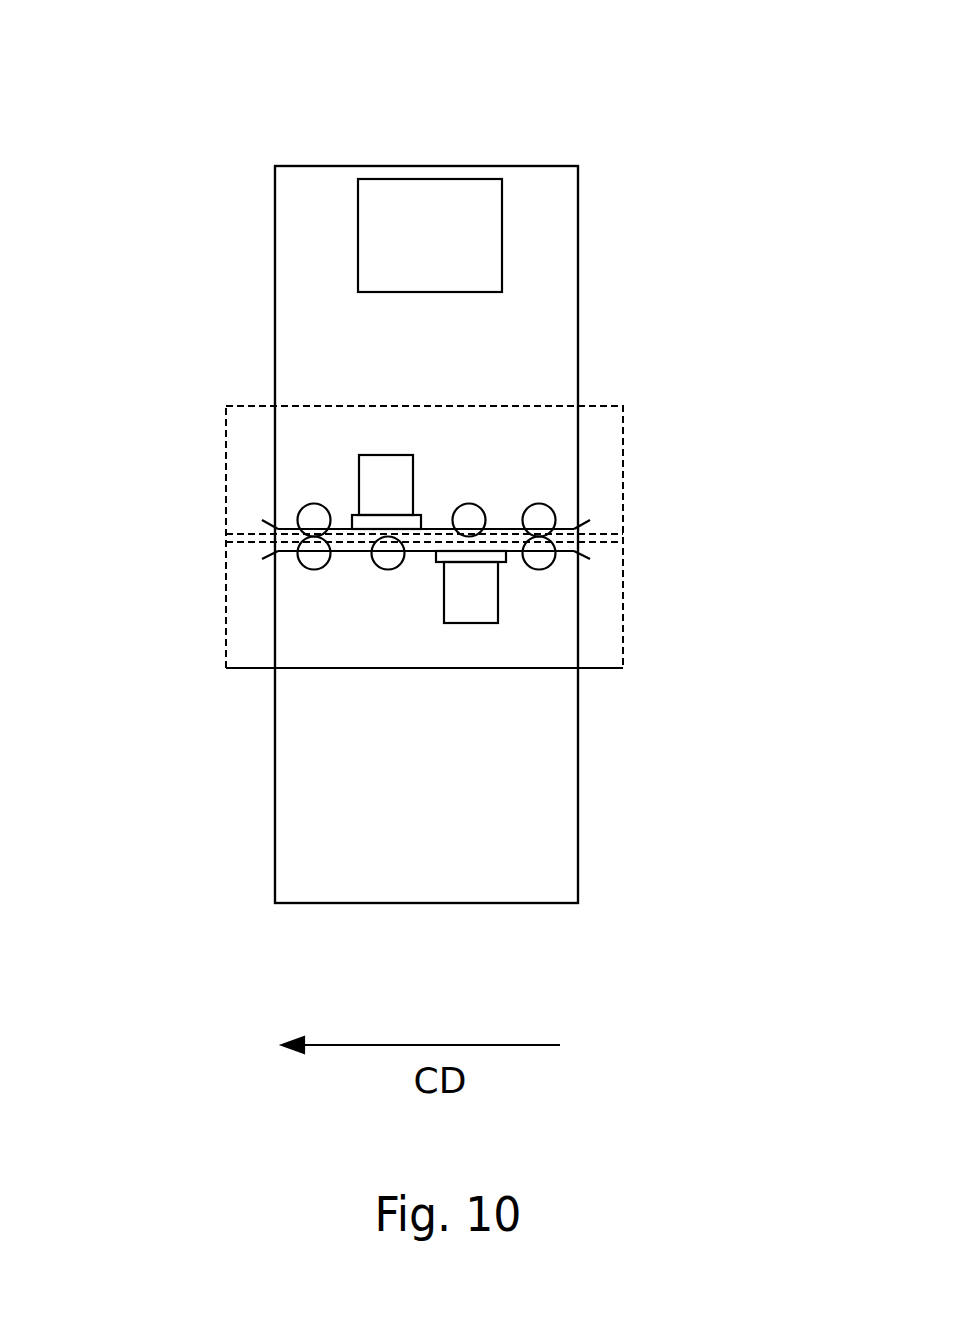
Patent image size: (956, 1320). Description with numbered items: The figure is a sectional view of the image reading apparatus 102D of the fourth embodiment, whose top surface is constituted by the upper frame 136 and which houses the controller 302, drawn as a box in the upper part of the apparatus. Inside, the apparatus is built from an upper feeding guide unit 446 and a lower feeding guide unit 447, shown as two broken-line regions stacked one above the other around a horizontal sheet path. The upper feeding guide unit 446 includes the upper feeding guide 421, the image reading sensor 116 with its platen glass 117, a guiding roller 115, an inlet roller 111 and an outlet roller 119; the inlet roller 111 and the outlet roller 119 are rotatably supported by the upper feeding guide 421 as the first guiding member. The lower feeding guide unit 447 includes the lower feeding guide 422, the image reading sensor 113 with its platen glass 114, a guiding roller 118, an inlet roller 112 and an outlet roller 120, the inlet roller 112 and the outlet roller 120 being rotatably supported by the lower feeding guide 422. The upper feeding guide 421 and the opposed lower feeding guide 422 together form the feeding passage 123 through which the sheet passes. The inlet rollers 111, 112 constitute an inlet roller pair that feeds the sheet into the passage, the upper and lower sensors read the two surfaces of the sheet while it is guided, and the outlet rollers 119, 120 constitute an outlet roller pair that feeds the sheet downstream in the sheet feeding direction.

The image reading apparatus 102D is at (434, 150).
The upper frame 136 is at (330, 166).
The controller 302 is at (399, 255).
The upper feeding guide unit 446 is at (519, 392).
The lower feeding guide unit 447 is at (533, 677).
The upper feeding guide 421 is at (503, 528).
The lower feeding guide 422 is at (350, 552).
The feeding passage 123 is at (573, 537).
The image reading sensor 116 is at (377, 463).
The platen glass 117 is at (393, 523).
The outlet roller 119 is at (310, 515).
The outlet roller 120 is at (310, 563).
The guiding roller 118 is at (387, 563).
The guiding roller 115 is at (469, 515).
The inlet roller 111 is at (545, 518).
The inlet roller 112 is at (545, 562).
The platen glass 114 is at (468, 556).
The image reading sensor 113 is at (468, 610).